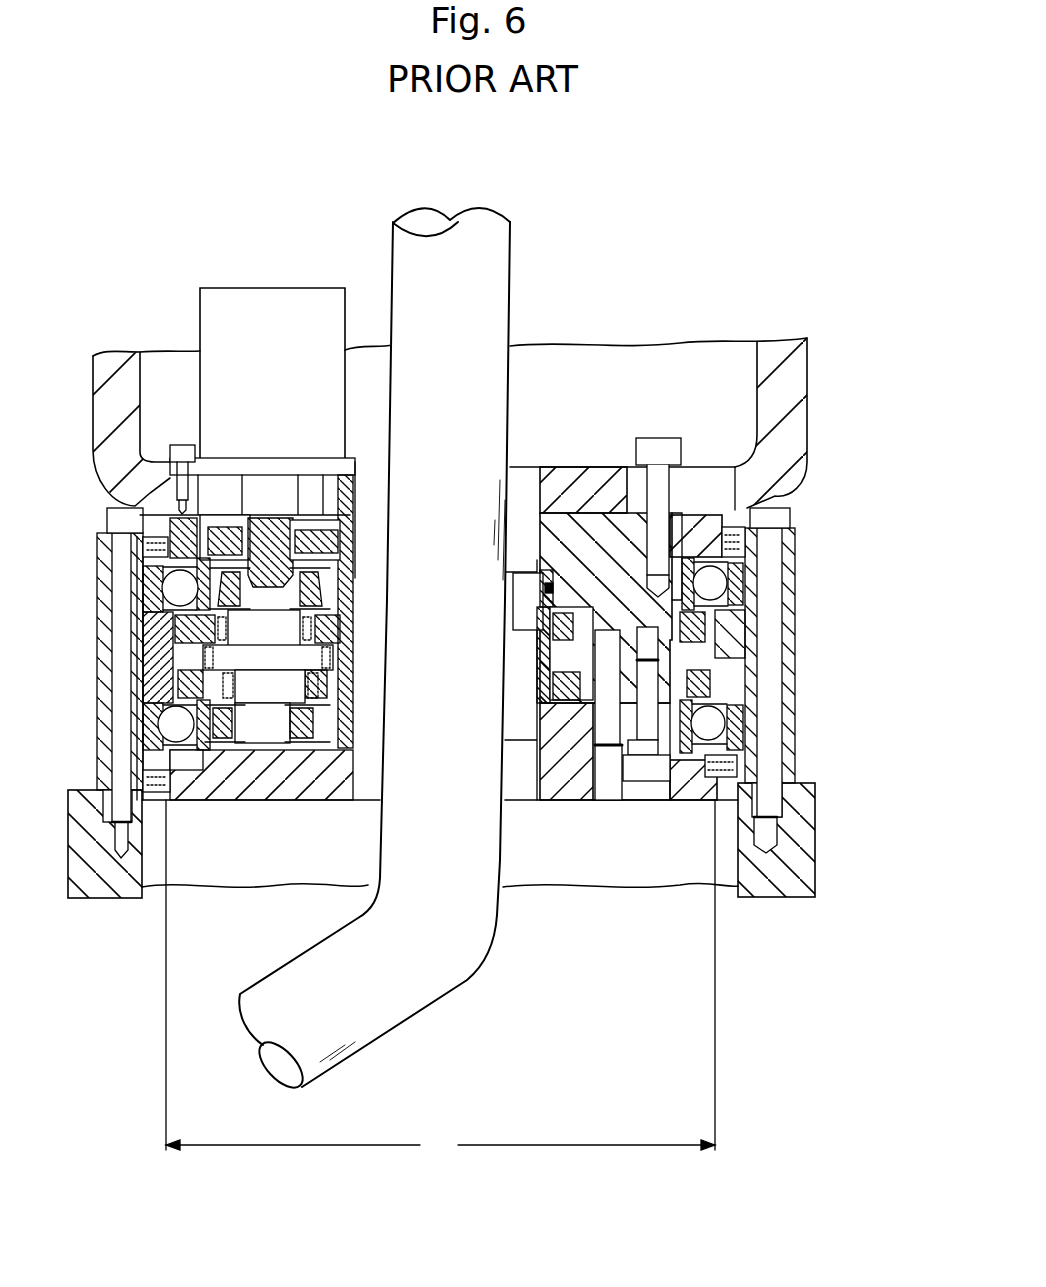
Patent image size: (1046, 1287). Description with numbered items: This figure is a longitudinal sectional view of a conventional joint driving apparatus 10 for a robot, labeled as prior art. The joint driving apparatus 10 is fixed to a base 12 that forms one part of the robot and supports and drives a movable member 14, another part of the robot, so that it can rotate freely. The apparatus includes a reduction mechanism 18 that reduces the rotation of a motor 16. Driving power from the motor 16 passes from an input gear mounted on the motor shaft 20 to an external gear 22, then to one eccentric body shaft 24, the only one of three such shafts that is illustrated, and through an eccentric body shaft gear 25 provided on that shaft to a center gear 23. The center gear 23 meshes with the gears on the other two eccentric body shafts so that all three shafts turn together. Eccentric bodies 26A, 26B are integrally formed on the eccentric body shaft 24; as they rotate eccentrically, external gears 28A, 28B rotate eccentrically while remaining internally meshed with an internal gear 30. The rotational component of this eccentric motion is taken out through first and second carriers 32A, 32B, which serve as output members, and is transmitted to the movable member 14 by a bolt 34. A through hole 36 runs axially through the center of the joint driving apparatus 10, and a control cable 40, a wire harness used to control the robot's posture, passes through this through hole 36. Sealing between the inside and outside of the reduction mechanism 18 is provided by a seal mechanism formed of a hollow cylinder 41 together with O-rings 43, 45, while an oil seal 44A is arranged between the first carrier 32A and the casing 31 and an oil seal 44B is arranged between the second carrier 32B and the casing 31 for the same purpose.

The joint driving apparatus 10 is at (661, 208).
The base 12 is at (95, 878).
The movable member 14 is at (778, 380).
The motor 16 is at (282, 305).
The reduction mechanism 18 is at (796, 593).
The motor shaft 20 is at (257, 485).
The external gear 22 is at (313, 530).
The center gear 23 is at (268, 628).
The eccentric body shaft 24 is at (268, 727).
The eccentric body shaft gear 25 is at (193, 652).
The eccentric body 26A is at (342, 615).
The eccentric body 26B is at (257, 690).
The external gear 28A is at (752, 633).
The external gear 28B is at (750, 712).
The internal gear 30 is at (757, 688).
The casing 31 is at (757, 700).
The first carrier 32A is at (688, 520).
The second carrier 32B is at (690, 790).
The bolt 34 is at (655, 440).
The through hole 36 is at (355, 763).
The control cable 40 is at (443, 997).
The hollow cylinder 41 is at (355, 690).
The O-ring 43 is at (353, 582).
The oil seal 44A is at (795, 543).
The oil seal 44B is at (757, 770).
The O-ring 45 is at (350, 735).